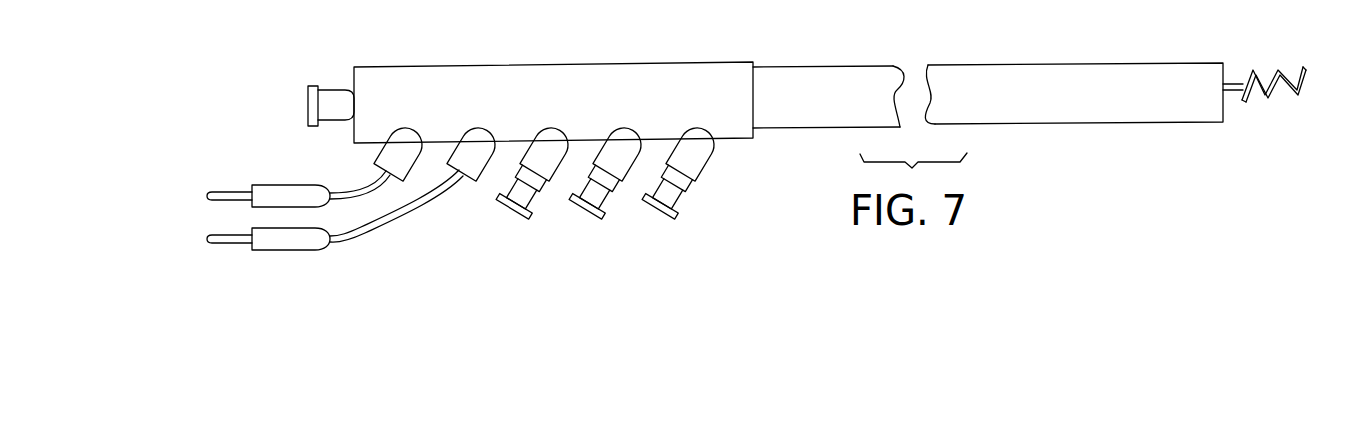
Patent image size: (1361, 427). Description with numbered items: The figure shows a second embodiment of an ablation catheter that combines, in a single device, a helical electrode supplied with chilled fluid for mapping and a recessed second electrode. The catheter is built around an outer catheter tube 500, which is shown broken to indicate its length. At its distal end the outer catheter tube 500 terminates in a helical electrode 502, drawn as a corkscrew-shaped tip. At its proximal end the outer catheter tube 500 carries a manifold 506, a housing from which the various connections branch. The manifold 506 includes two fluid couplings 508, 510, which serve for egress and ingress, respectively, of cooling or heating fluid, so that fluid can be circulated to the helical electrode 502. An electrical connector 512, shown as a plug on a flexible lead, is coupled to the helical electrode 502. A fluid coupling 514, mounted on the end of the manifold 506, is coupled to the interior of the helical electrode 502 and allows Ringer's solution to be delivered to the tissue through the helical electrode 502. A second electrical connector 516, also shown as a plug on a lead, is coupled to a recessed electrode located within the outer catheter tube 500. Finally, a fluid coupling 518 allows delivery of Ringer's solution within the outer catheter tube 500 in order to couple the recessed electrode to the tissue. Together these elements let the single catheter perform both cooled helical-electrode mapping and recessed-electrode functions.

The outer catheter tube 500 is at (1006, 63).
The helical electrode 502 is at (1265, 95).
The manifold 506 is at (603, 62).
The fluid coupling 508 is at (580, 218).
The fluid coupling 510 is at (500, 228).
The electrical connector 512 is at (221, 203).
The fluid coupling 514 is at (306, 106).
The electrical connector 516 is at (214, 246).
The fluid coupling 518 is at (667, 215).